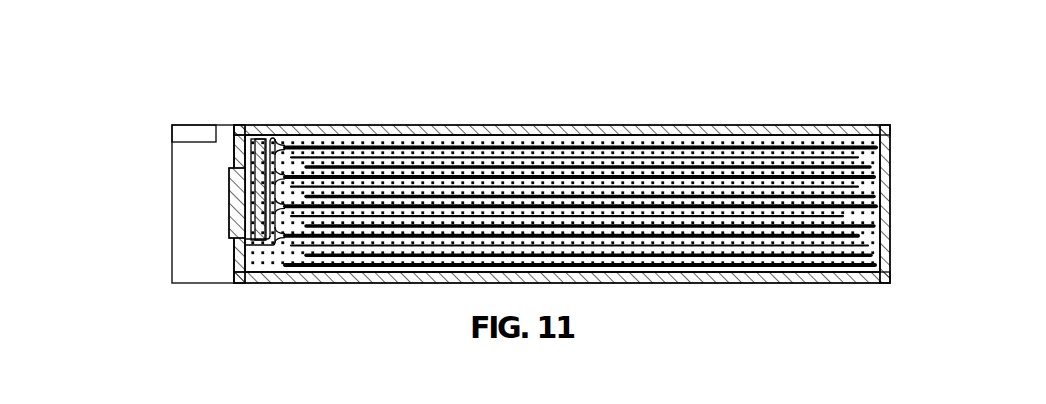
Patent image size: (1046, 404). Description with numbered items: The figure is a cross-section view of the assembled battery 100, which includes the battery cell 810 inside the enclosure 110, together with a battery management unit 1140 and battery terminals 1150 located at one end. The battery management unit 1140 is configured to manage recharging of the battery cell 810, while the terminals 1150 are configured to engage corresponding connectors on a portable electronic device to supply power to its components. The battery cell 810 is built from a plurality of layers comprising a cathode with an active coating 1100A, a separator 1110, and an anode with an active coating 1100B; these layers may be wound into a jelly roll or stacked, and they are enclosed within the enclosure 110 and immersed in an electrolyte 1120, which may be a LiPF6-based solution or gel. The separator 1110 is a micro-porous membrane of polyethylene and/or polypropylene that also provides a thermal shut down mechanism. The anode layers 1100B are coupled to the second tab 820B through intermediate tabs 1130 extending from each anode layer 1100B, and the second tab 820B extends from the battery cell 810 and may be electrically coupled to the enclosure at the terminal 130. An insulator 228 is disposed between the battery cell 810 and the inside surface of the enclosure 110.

The assembled battery 100 is at (78, 32).
The enclosure 110 is at (590, 118).
The terminal 130 is at (222, 187).
The insulator 228 is at (233, 140).
The battery cell 810 is at (626, 195).
The second tab 820B is at (233, 232).
The cathode with active coating 1100A is at (624, 285).
The anode with active coating 1100B is at (835, 143).
The separator 1110 is at (626, 195).
The electrolyte 1120 is at (502, 128).
The intermediate tabs 1130 is at (263, 126).
The battery management unit 1140 is at (164, 205).
The battery terminals 1150 is at (183, 125).